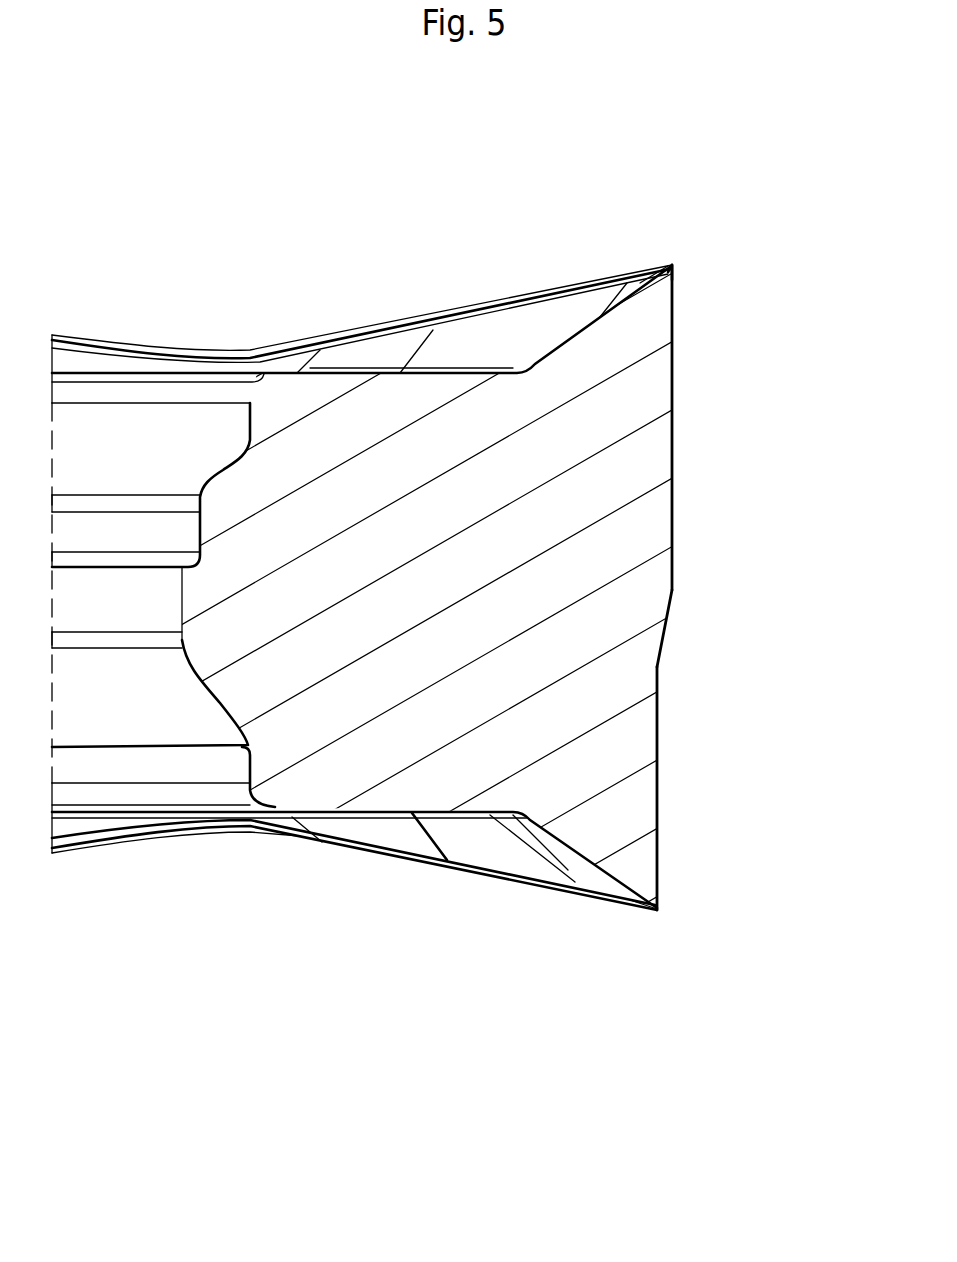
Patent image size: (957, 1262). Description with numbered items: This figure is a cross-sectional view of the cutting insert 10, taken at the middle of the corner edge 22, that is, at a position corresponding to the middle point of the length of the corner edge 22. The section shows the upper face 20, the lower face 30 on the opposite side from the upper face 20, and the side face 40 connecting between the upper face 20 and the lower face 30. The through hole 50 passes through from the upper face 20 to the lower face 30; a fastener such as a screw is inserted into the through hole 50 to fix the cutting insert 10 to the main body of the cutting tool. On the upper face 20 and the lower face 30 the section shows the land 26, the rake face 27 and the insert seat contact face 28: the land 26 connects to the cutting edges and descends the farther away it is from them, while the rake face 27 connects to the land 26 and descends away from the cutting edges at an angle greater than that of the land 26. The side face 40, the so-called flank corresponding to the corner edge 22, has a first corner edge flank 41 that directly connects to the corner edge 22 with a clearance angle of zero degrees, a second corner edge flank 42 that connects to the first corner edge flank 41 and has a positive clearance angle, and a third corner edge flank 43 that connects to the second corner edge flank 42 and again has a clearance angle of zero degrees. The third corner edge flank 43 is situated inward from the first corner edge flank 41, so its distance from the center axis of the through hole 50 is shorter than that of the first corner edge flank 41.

The cutting insert 10 is at (331, 1180).
The upper face 20 is at (352, 152).
The corner edge 22 is at (677, 255).
The land 26 is at (649, 266).
The rake face 27 is at (553, 350).
The insert seat contact face 28 is at (392, 372).
The lower face 30 is at (352, 1008).
The side face 40 is at (762, 587).
The first corner edge flank 41 is at (672, 423).
The second corner edge flank 42 is at (667, 630).
The third corner edge flank 43 is at (731, 788).
The through hole 50 is at (217, 470).